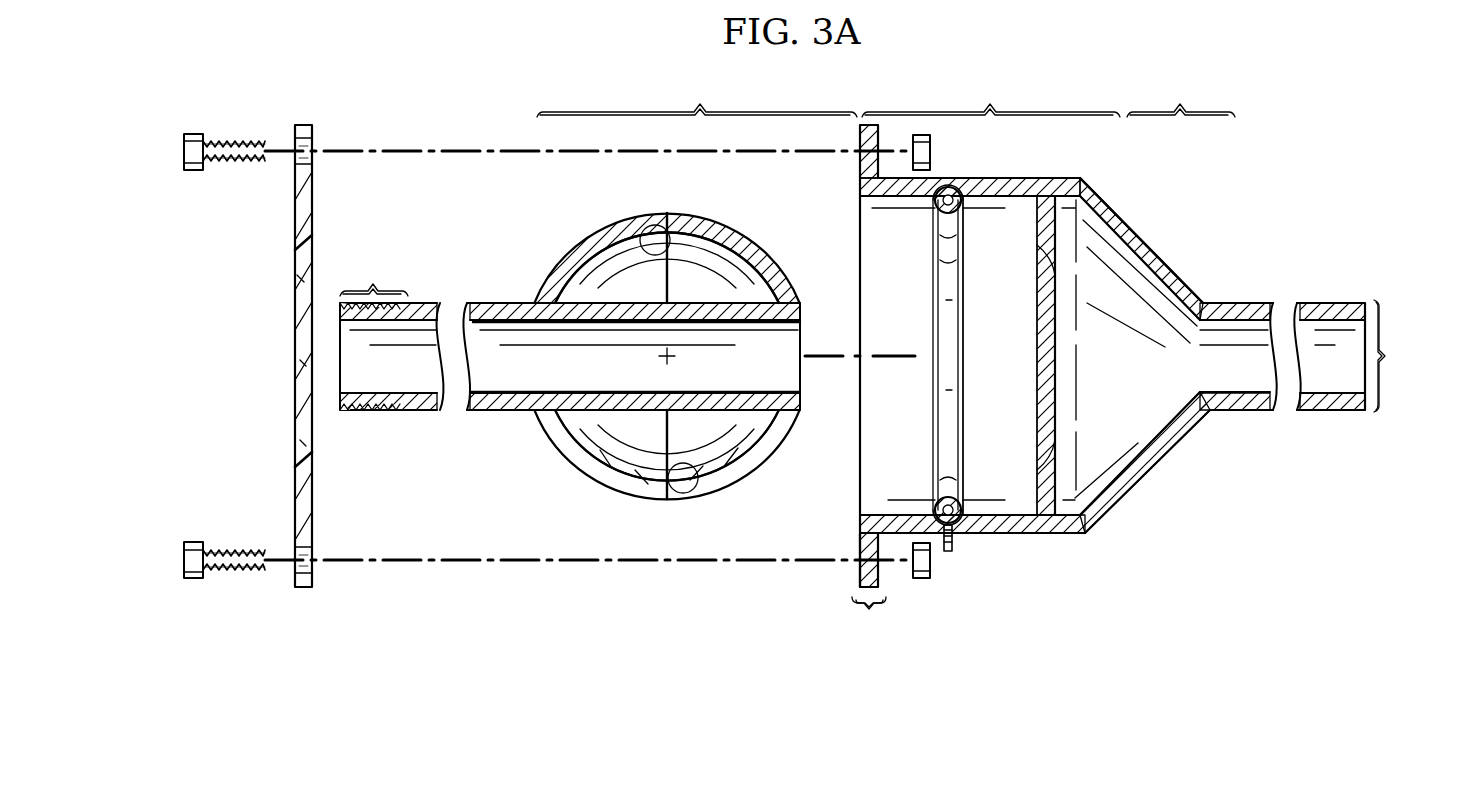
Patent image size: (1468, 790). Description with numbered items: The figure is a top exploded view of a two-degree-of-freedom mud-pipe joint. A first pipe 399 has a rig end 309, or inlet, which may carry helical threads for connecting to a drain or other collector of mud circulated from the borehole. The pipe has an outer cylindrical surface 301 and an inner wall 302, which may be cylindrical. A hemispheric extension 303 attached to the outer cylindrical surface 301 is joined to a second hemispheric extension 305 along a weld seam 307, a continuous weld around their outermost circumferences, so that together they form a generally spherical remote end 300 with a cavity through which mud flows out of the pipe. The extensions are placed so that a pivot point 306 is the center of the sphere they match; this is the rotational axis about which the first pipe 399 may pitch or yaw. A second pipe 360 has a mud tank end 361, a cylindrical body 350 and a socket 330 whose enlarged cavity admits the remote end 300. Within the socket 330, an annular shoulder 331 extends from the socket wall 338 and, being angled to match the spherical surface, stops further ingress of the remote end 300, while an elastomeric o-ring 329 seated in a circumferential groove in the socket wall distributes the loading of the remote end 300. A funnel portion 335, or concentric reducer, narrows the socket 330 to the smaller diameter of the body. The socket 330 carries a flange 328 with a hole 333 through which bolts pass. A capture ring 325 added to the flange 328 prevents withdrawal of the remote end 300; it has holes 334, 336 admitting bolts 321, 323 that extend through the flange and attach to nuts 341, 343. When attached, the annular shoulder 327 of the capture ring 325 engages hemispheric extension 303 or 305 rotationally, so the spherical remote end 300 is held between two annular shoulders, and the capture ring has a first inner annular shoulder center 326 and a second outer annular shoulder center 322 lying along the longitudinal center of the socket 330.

The first pipe 399 is at (440, 82).
The remote end 300 is at (585, 318).
The outer cylindrical surface 301 is at (500, 301).
The inner wall 302 is at (572, 370).
The hemispheric extension 303 is at (580, 268).
The second hemispheric extension 305 is at (746, 238).
The pivot point 306 is at (672, 356).
The weld seam 307 is at (655, 225).
The rig end 309 is at (391, 331).
The bolt 321 is at (190, 134).
The second outer annular shoulder center 322 is at (818, 353).
The bolt 323 is at (192, 580).
The capture ring 325 is at (300, 118).
The first inner annular shoulder center 326 is at (862, 353).
The annular shoulder 327 is at (303, 255).
The flange 328 is at (866, 620).
The o-ring 329 is at (936, 210).
The socket 330 is at (1031, 331).
The annular shoulder 331 is at (1045, 258).
The hole 333 is at (860, 566).
The hole 334 is at (316, 142).
The funnel portion 335 is at (1140, 240).
The hole 336 is at (316, 568).
The socket wall 338 is at (990, 199).
The nut 341 is at (921, 580).
The nut 343 is at (932, 150).
The cylindrical body 350 is at (1155, 304).
The second pipe 360 is at (1238, 222).
The mud tank end 361 is at (1364, 356).